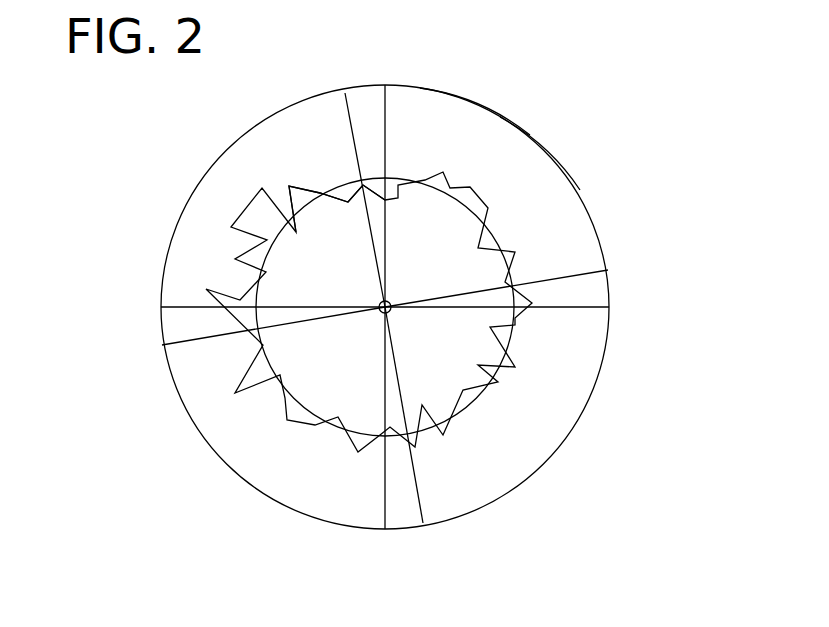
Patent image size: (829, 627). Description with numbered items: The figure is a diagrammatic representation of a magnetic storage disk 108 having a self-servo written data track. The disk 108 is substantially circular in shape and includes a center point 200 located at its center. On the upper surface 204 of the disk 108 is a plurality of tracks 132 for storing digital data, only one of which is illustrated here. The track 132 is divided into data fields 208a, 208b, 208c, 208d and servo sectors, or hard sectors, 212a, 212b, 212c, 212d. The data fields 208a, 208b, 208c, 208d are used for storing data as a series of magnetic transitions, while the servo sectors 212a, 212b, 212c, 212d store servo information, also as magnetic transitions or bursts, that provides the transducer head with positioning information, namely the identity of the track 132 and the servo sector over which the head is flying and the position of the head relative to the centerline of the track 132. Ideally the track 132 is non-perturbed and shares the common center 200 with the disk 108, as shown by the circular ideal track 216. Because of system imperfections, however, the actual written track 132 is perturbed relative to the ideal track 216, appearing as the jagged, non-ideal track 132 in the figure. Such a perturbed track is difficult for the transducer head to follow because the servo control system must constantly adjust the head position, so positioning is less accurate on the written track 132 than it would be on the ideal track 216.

The disk 108 is at (541, 156).
The track 132 is at (232, 248).
The center point 200 is at (390, 303).
The upper surface 204 is at (482, 106).
The data field 208a is at (563, 192).
The data field 208b is at (552, 427).
The data field 208c is at (210, 432).
The data field 208d is at (218, 175).
The servo sector 212a is at (366, 95).
The servo sector 212b is at (612, 292).
The servo sector 212c is at (411, 519).
The servo sector 212d is at (165, 327).
The ideal track 216 is at (335, 187).